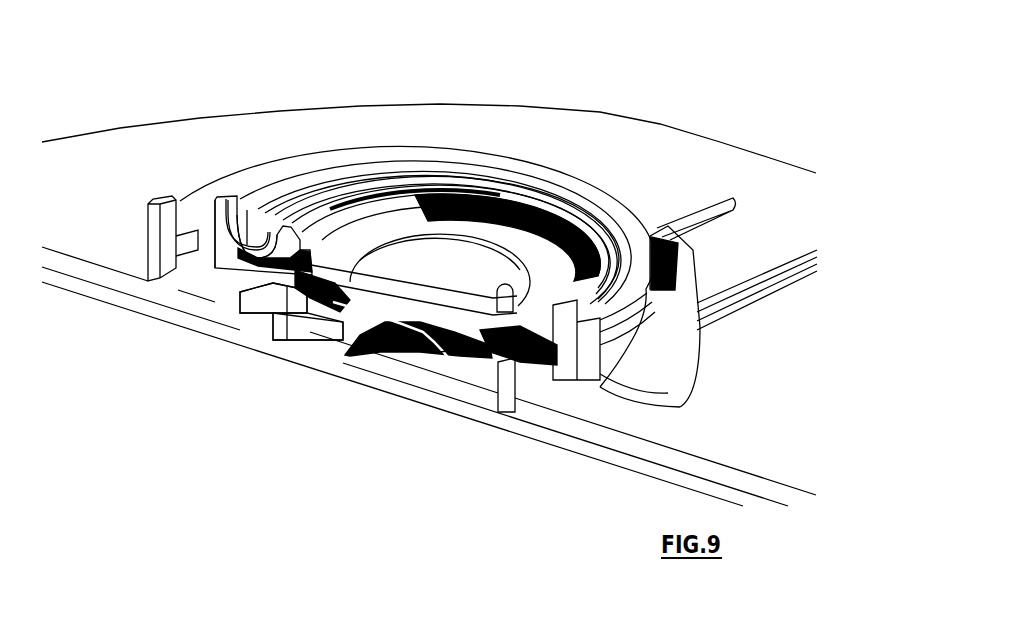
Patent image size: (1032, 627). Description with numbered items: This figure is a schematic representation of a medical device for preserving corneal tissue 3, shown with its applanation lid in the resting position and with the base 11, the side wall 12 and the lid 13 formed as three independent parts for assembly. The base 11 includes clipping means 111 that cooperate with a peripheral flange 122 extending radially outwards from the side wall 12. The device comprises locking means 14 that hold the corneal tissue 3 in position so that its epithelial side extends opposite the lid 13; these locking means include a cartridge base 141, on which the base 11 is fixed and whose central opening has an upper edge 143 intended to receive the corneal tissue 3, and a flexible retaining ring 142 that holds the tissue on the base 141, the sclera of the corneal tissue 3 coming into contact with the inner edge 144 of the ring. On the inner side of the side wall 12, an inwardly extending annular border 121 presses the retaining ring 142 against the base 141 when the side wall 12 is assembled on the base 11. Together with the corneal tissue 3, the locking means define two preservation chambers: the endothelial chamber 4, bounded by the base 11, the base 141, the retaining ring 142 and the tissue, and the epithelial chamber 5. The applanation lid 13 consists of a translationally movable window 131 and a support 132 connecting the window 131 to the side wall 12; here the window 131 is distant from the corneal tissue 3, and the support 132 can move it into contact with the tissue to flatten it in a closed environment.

The base 11 is at (107, 292).
The clipping means 111 is at (150, 240).
The side wall 12 is at (207, 202).
The annular border 121 is at (497, 358).
The peripheral flange 122 is at (631, 413).
The applanation lid 13 is at (401, 220).
The window 131 is at (436, 287).
The support 132 is at (253, 245).
The locking means 14 is at (188, 473).
The base 141 is at (291, 337).
The retaining ring 142 is at (259, 310).
The upper edge 143 is at (447, 352).
The inner edge 144 is at (463, 348).
The corneal tissue 3 is at (330, 95).
The endothelial chamber 4 is at (412, 366).
The epithelial chamber 5 is at (330, 95).